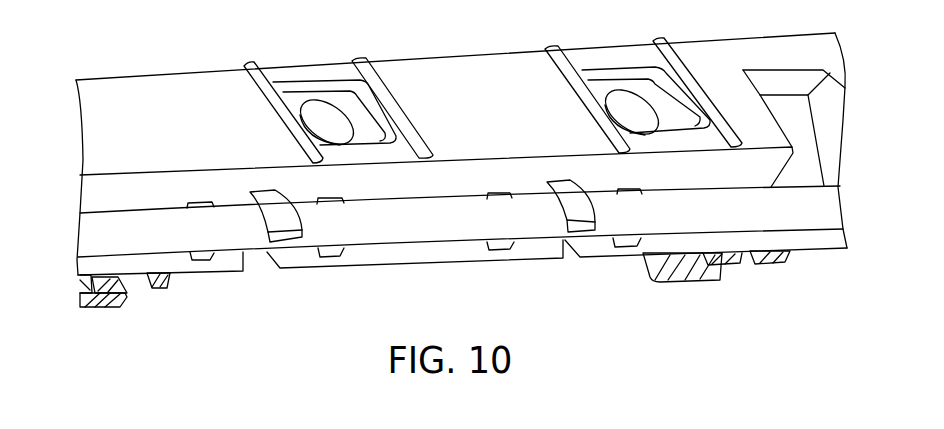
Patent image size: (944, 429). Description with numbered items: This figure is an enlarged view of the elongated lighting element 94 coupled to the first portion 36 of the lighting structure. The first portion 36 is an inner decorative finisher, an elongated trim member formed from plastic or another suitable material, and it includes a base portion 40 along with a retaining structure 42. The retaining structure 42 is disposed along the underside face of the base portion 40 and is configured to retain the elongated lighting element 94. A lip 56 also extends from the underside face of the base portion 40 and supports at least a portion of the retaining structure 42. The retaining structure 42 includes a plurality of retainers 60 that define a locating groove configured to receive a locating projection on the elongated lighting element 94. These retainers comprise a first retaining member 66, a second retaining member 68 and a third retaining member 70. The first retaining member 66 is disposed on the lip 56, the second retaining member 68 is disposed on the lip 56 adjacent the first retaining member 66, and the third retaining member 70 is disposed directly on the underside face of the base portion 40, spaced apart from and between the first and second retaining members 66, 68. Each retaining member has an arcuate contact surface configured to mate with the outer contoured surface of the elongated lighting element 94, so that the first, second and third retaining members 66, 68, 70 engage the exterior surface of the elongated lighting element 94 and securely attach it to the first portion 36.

The first portion 36 is at (477, 75).
The base portion 40 is at (108, 196).
The retaining structure 42 is at (553, 253).
The lip 56 is at (90, 268).
The retainers 60 is at (239, 204).
The first retaining member 66 is at (202, 262).
The second retaining member 68 is at (325, 258).
The third retaining member 70 is at (280, 200).
The elongated lighting element 94 is at (420, 246).